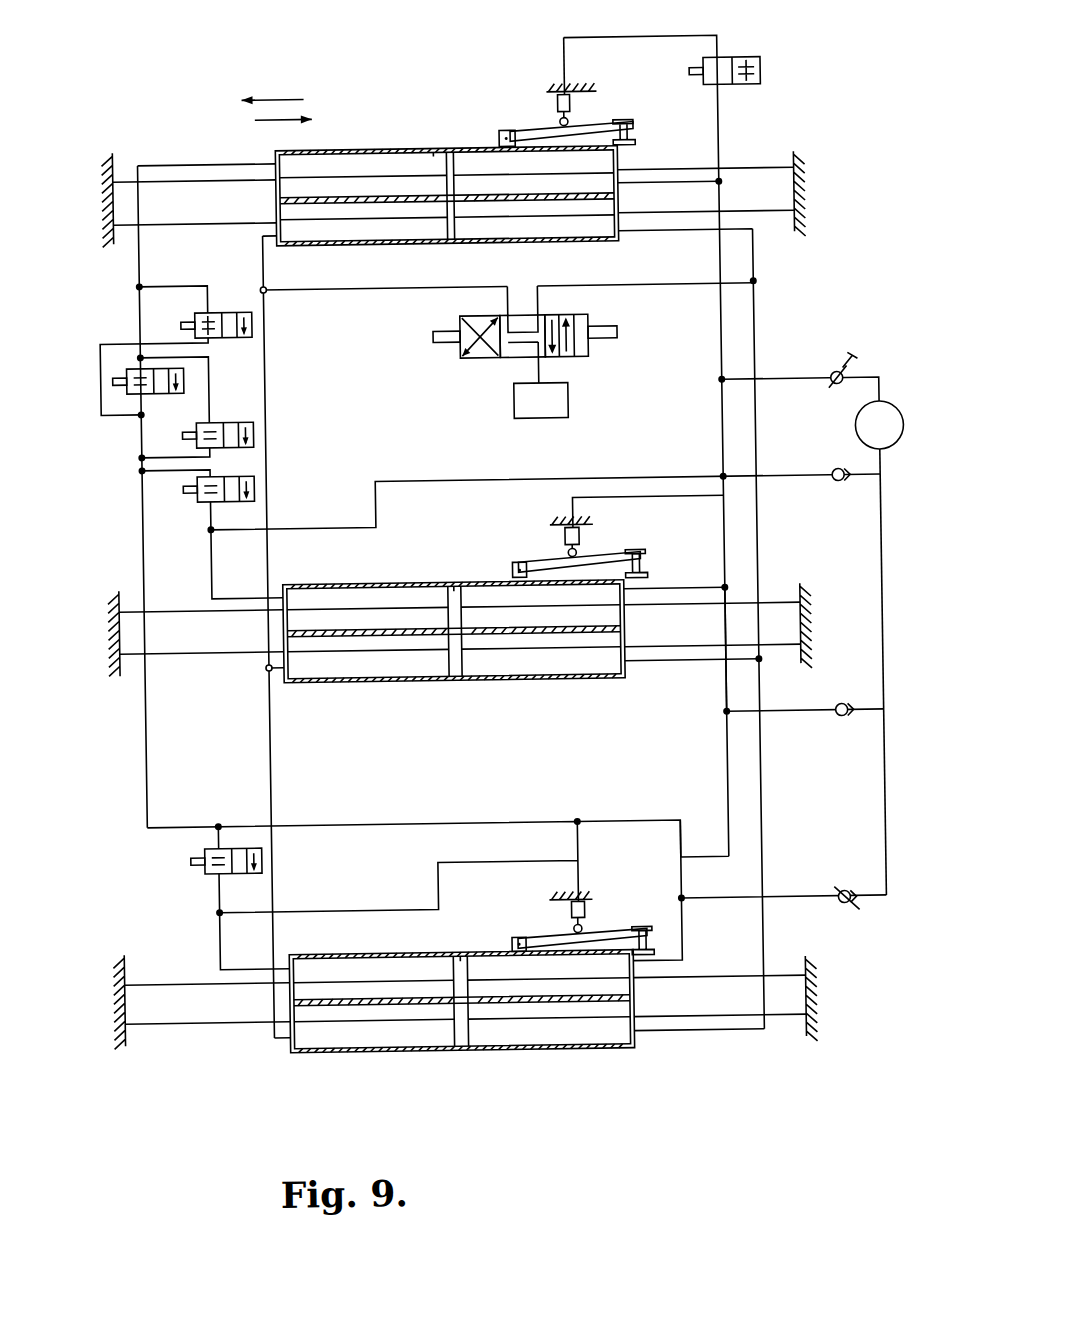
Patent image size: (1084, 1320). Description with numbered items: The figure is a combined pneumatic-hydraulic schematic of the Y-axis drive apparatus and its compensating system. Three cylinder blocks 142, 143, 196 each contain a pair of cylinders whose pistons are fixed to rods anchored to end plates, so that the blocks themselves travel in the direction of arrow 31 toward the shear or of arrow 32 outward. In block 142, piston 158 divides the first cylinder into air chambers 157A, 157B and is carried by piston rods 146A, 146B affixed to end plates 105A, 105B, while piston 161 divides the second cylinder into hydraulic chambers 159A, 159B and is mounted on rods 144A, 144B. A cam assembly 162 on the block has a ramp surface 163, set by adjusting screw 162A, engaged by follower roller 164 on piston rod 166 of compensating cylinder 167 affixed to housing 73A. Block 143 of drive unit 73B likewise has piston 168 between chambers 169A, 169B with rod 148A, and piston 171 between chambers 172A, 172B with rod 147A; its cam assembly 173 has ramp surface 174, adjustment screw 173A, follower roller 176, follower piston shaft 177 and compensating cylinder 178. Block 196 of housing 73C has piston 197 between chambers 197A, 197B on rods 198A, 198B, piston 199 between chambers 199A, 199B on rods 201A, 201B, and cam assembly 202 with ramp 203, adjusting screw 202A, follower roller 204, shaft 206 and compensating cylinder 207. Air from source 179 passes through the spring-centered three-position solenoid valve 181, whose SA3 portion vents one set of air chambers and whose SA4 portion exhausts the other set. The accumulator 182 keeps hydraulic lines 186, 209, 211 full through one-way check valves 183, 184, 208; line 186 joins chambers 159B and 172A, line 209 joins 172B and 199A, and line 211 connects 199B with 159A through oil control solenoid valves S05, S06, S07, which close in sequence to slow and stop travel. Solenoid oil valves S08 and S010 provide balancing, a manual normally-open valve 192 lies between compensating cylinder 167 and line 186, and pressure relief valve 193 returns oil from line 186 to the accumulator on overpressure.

The arrow 31 is at (262, 96).
The arrow 32 is at (274, 116).
The cylinder block 142 is at (410, 138).
The piston 161 is at (441, 146).
The chamber 159A is at (383, 160).
The chamber 159B is at (497, 163).
The chamber 157A is at (342, 236).
The chamber 157B is at (575, 237).
The piston 158 is at (458, 240).
The piston rod 144A is at (136, 176).
The piston rod 144B is at (792, 171).
The piston rod 146A is at (222, 220).
The piston rod 146B is at (772, 218).
The end plate 105A is at (110, 236).
The end plate 105B is at (810, 186).
The Y-axis drive housing 73A is at (553, 88).
The piston rod 166 is at (562, 104).
The compensating cylinder 167 is at (578, 97).
The follower roller 164 is at (566, 120).
The cam assembly 162 is at (593, 120).
The ramp surface 163 is at (627, 119).
The cam ramp inclination adjusting screw 162A is at (642, 146).
The manually operated normally-open valve 192 is at (754, 88).
The hydraulic line 186 is at (724, 414).
The three position solenoid-operated valve 181 is at (525, 338).
The SA3 portion of valve SA3 is at (467, 318).
The SA4 portion of valve SA4 is at (586, 318).
The source of air 179 is at (516, 398).
The oil control solenoid valve S05 is at (168, 389).
The oil control solenoid valve S06 is at (232, 334).
The oil control solenoid valve S07 is at (240, 404).
The solenoid operated oil valve S08 is at (258, 488).
The solenoid operated oil valve S010 is at (210, 872).
The pressure relief valve 193 is at (833, 388).
The accumulator 182 is at (858, 432).
The one-way check valve 183 is at (838, 486).
The one-way check valve 184 is at (836, 724).
The one-way check valve 208 is at (848, 906).
The hydraulic line 209 is at (724, 762).
The hydraulic line 211 is at (677, 826).
The cylinder block 143 is at (420, 698).
The chamber 172A is at (367, 584).
The chamber 172B is at (498, 578).
The chamber 169A is at (355, 670).
The chamber 169B is at (513, 670).
The piston 168 is at (455, 675).
The piston 171 is at (454, 582).
The piston rod 147A is at (150, 606).
The piston rod 148A is at (230, 650).
The Y-axis drive unit housing 73B is at (562, 520).
The compensating cylinder 178 is at (594, 530).
The follower piston shaft 177 is at (582, 553).
The cam assembly 173 is at (599, 547).
The follower roller 176 is at (566, 552).
The ramp surface 174 is at (633, 550).
The adjustment screw 173A is at (648, 574).
The cylinder block 196 is at (410, 1082).
The chamber 199A is at (375, 958).
The chamber 199B is at (488, 960).
The chamber 197A is at (382, 1050).
The chamber 197B is at (535, 1050).
The piston 197 is at (455, 1050).
The piston 199 is at (451, 958).
The piston rod 201A is at (150, 979).
The piston rod 201B is at (776, 979).
The piston rod 198A is at (210, 1020).
The piston rod 198B is at (768, 1020).
The drive unit housing 73C is at (560, 892).
The compensating cylinder 207 is at (560, 910).
The shaft 206 is at (584, 928).
The cam assembly 202 is at (599, 911).
The follower roller 204 is at (562, 931).
The ramp 203 is at (634, 926).
The adjusting screw 202A is at (648, 950).